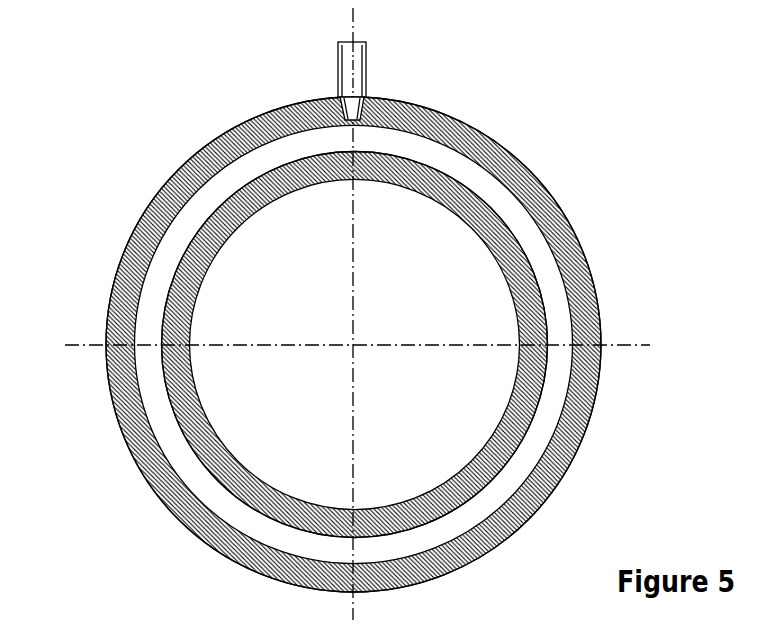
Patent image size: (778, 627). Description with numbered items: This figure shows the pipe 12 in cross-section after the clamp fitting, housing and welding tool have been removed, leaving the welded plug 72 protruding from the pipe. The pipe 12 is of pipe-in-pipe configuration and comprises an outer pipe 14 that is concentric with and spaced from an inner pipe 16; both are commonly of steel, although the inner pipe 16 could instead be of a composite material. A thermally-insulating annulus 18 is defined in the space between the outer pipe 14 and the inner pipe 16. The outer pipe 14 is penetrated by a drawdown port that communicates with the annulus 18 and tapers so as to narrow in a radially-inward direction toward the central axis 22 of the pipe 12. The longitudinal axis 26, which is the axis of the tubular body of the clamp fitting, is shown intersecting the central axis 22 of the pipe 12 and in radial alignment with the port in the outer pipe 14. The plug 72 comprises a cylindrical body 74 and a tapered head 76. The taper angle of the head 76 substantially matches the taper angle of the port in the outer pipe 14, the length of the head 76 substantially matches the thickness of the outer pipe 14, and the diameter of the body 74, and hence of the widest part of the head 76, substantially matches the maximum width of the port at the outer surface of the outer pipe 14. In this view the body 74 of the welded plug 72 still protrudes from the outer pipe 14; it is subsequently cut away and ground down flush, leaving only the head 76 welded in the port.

The pipe 12 is at (80, 216).
The outer pipe 14 is at (572, 229).
The inner pipe 16 is at (249, 210).
The thermally-insulating annulus 18 is at (168, 260).
The central axis 22 is at (355, 344).
The longitudinal axis 26 is at (355, 256).
The plug 72 is at (362, 96).
The cylindrical body 74 is at (338, 66).
The tapered head 76 is at (372, 122).